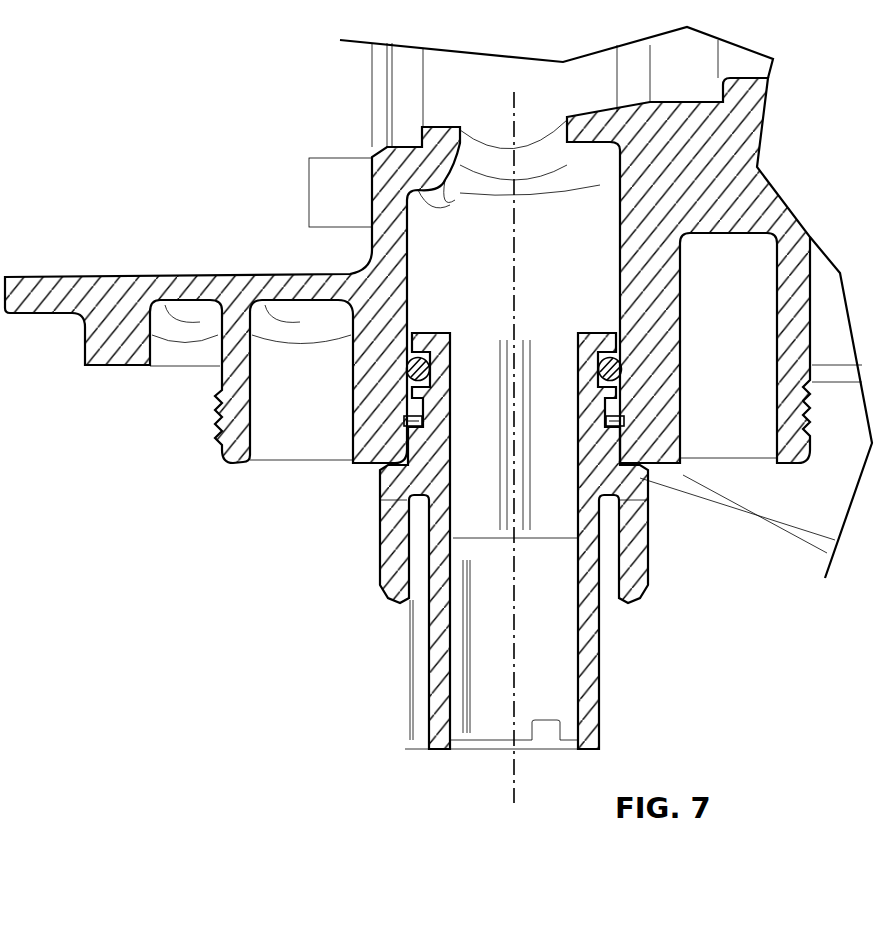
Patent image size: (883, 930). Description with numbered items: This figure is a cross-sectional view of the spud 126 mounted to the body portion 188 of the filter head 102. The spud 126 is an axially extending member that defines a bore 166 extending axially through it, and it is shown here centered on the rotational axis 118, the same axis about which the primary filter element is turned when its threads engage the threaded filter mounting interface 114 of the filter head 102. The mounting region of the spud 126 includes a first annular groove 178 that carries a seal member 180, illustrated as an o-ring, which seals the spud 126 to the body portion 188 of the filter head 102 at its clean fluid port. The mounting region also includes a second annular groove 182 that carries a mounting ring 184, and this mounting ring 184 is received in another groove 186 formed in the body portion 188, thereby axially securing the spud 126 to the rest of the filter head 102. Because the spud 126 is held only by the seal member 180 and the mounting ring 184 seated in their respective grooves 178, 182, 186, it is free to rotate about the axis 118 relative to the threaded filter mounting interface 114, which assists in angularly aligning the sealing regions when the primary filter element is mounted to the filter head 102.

The filter head 102 is at (300, 687).
The threaded filter mounting interface 114 is at (206, 460).
The rotational axis 118 is at (513, 778).
The spud 126 is at (430, 673).
The bore 166 is at (526, 667).
The first annular groove 178 is at (394, 380).
The seal member 180 is at (618, 362).
The second annular groove 182 is at (390, 416).
The mounting ring 184 is at (620, 420).
The groove 186 is at (590, 404).
The body portion 188 is at (371, 432).